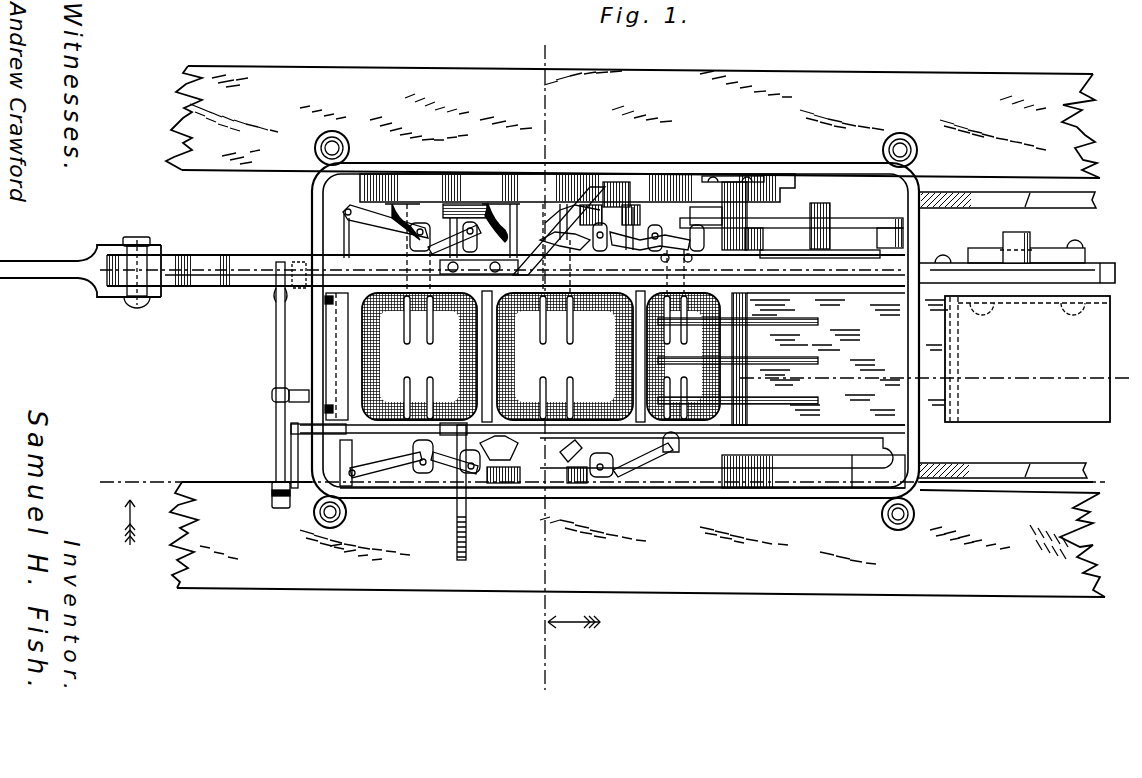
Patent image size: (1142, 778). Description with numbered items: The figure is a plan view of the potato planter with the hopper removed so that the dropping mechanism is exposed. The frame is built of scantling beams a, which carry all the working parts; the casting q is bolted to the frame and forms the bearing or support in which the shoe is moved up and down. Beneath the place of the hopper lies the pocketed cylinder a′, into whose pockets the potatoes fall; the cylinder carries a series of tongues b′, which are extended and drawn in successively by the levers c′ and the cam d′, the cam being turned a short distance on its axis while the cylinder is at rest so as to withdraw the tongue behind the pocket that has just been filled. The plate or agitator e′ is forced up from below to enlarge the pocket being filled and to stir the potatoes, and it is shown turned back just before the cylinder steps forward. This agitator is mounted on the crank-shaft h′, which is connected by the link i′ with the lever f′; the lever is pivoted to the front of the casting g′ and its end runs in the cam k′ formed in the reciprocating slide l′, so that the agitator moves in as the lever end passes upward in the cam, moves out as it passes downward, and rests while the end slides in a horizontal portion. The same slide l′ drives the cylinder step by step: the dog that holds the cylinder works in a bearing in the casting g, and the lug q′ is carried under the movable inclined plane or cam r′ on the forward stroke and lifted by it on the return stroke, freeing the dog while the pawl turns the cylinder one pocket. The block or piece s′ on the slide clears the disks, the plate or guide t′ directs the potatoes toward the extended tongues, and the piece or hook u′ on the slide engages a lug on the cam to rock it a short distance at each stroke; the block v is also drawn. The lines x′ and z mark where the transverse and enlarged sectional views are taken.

The frame beam a is at (687, 150).
The cylinder a′ is at (541, 356).
The tongues b′ is at (353, 352).
The levers c′ is at (507, 217).
The cam d′ is at (450, 185).
The plate or agitator e′ is at (468, 522).
The lever f′ is at (280, 340).
The casting g is at (827, 210).
The casting g′ is at (907, 173).
The crank-shaft h′ is at (323, 437).
The link i′ is at (273, 487).
The cam k′ is at (300, 280).
The reciprocating slide l′ is at (230, 265).
The casting q is at (813, 480).
The lug q′ is at (398, 492).
The movable inclined plane or cam r′ is at (1020, 242).
The block or piece s′ is at (1027, 359).
The plate or guide t′ is at (330, 353).
The piece or hook u′ is at (547, 223).
The block v is at (617, 190).
The section line x′ x′ is at (565, 353).
The section line z z is at (598, 457).